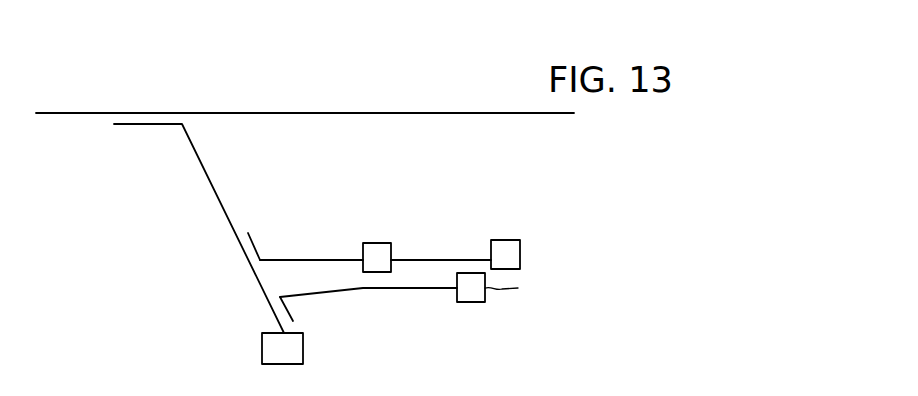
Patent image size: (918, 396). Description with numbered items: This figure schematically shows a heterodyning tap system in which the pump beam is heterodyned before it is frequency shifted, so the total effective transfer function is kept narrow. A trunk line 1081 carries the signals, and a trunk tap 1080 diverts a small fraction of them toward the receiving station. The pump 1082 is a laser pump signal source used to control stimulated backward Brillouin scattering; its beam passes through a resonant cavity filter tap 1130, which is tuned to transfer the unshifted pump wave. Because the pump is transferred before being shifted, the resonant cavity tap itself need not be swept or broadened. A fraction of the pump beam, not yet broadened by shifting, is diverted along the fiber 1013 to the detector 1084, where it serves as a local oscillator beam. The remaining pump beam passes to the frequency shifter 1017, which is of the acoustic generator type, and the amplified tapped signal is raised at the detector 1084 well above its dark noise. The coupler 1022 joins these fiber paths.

The trunk tap 1080 is at (118, 121).
The trunk line 1081 is at (281, 110).
The pump 1082 is at (535, 226).
The detector 1084 is at (303, 360).
The coupler 1022 is at (375, 243).
The resonant cavity filter tap 1130 is at (447, 258).
The fiber 1013 is at (347, 296).
The frequency shifter 1017 is at (485, 302).